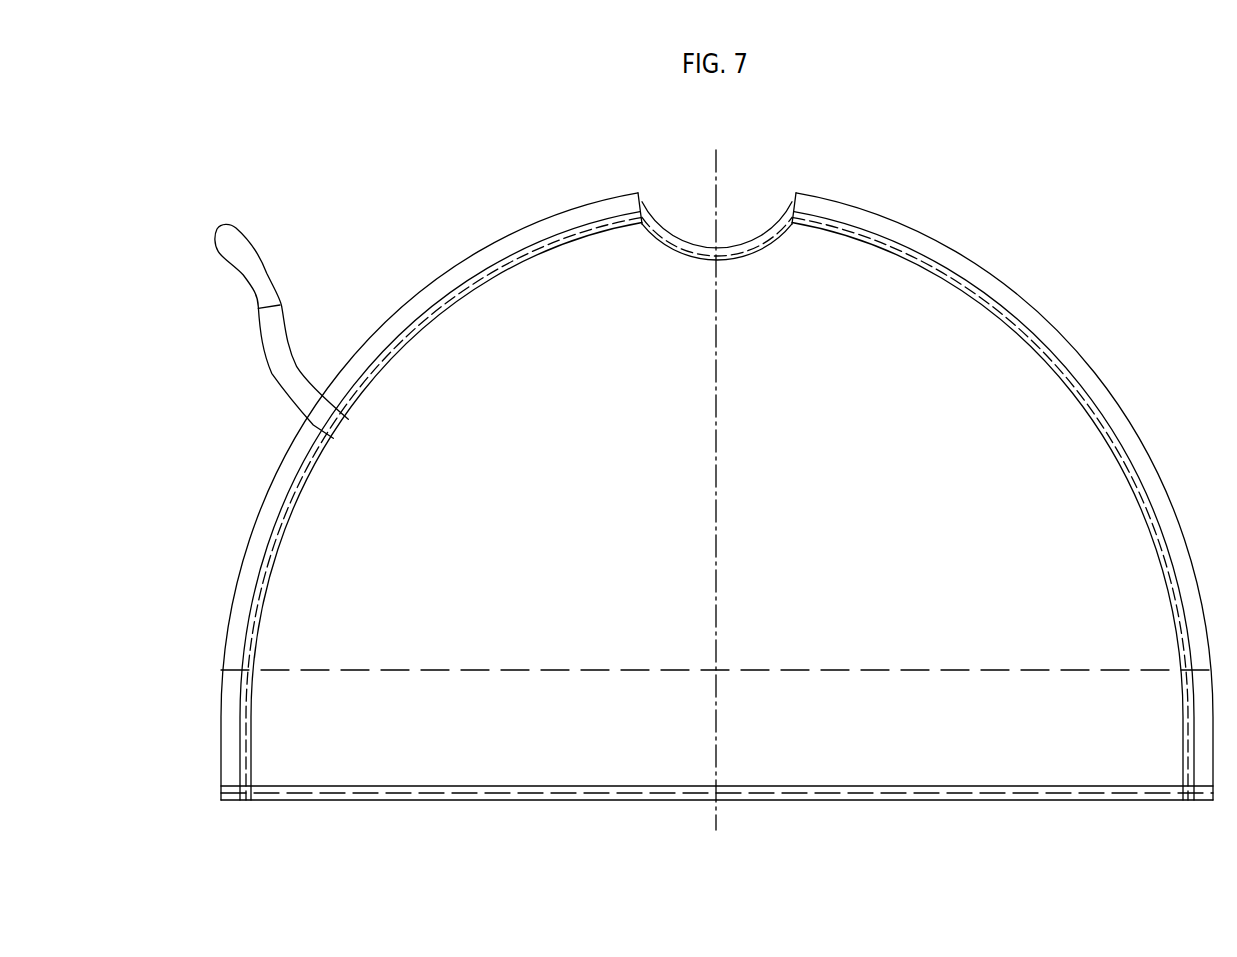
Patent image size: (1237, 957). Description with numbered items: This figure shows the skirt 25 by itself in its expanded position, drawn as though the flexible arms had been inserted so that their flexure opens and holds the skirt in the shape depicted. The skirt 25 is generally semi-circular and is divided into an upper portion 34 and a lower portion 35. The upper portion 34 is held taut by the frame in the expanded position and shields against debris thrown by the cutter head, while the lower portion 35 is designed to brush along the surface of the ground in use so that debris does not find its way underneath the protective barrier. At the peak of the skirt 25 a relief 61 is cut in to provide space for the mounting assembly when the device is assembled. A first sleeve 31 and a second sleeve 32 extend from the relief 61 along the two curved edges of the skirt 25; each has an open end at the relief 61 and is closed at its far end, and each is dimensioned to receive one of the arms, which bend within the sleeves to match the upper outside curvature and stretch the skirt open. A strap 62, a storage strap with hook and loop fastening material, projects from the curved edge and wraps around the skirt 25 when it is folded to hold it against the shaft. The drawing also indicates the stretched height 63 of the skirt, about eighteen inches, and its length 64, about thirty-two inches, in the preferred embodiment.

The skirt 25 is at (913, 120).
The first sleeve 31 is at (650, 196).
The second sleeve 32 is at (788, 203).
The upper portion 34 is at (880, 507).
The lower portion 35 is at (915, 737).
The relief 61 is at (753, 238).
The strap 62 is at (262, 247).
The stretched height 63 is at (221, 800).
The length 64 is at (1213, 868).